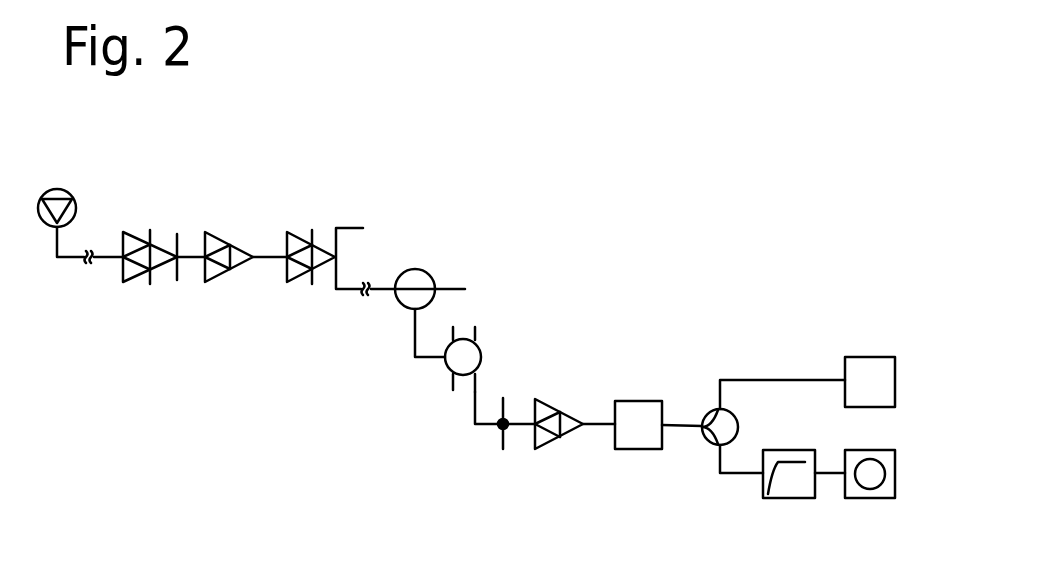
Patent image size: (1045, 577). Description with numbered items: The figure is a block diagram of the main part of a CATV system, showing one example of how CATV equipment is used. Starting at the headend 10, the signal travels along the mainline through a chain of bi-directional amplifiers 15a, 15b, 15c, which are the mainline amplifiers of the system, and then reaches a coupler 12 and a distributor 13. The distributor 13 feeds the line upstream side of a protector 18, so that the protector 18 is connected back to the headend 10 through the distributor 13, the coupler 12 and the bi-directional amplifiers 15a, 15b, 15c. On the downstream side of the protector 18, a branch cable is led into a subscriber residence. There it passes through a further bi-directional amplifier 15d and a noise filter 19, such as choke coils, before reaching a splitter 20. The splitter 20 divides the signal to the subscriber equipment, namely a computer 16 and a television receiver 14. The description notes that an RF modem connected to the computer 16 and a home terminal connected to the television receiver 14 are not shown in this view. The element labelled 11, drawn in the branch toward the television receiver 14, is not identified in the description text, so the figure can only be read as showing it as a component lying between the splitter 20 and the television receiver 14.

The headend 10 is at (76, 194).
The bi-directional amplifier 15a is at (140, 233).
The bi-directional amplifier 15b is at (222, 233).
The bi-directional amplifier 15c is at (305, 233).
The coupler 12 is at (428, 272).
The distributor 13 is at (478, 338).
The protector 18 is at (497, 431).
The bi-directional amplifier 15d is at (553, 400).
The noise filter 19 is at (637, 401).
The splitter 20 is at (707, 442).
The high-pass filter (HPF) 11 is at (790, 450).
The computer 16 is at (888, 357).
The television receiver 14 is at (888, 450).